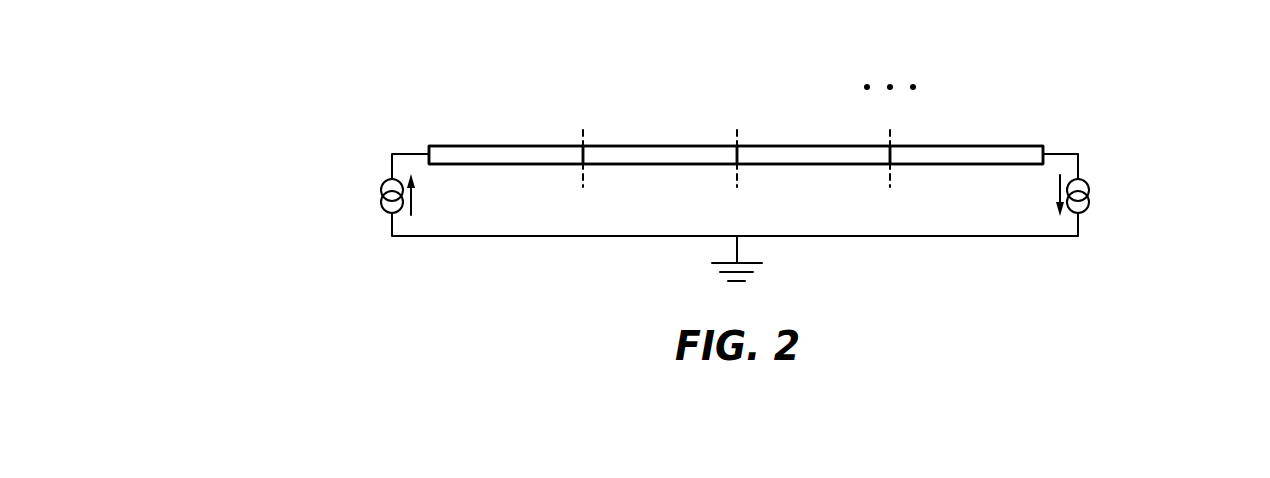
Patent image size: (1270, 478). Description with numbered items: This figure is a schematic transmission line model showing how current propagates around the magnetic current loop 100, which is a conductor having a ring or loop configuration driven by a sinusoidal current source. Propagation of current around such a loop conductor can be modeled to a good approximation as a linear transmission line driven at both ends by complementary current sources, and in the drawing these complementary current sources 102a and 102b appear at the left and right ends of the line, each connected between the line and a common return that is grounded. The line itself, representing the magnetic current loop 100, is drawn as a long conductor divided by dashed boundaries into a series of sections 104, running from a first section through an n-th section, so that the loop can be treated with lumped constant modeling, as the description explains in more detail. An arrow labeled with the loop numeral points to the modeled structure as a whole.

The magnetic current loop 100 is at (736, 93).
The sections 104 is at (736, 122).
The complementary current source 102a is at (1089, 192).
The complementary current source 102b is at (381, 201).